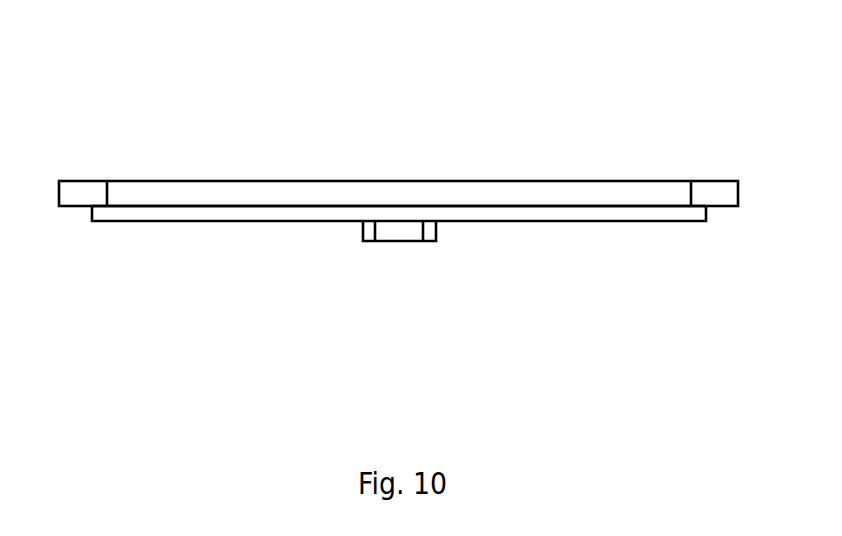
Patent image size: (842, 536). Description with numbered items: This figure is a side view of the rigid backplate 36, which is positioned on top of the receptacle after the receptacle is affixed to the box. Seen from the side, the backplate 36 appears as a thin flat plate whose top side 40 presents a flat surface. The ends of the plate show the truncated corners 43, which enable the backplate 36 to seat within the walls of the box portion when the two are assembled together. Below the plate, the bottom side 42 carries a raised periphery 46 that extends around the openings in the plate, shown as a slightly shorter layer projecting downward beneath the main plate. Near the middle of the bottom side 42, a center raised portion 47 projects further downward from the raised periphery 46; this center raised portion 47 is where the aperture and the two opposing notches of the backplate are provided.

The backplate 36 is at (408, 202).
The top side 40 is at (563, 181).
The bottom side 42 is at (560, 206).
The truncated corners 43 is at (80, 192).
The raised periphery 46 is at (231, 213).
The center raised portion 47 is at (398, 242).